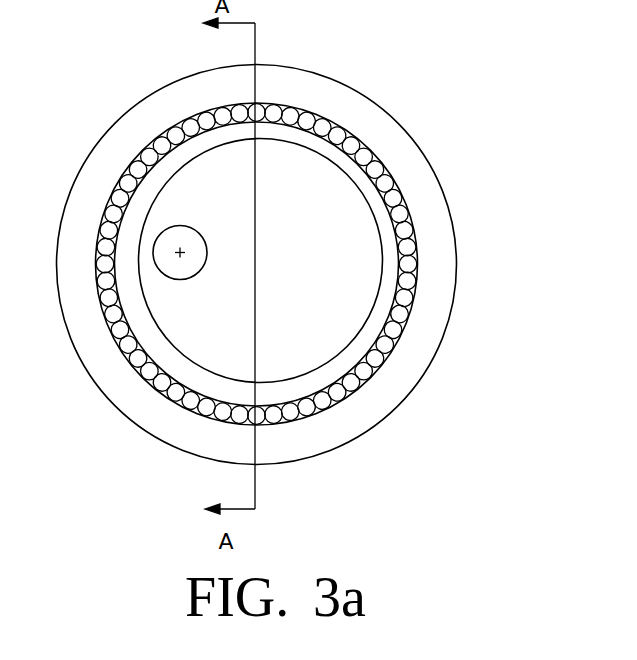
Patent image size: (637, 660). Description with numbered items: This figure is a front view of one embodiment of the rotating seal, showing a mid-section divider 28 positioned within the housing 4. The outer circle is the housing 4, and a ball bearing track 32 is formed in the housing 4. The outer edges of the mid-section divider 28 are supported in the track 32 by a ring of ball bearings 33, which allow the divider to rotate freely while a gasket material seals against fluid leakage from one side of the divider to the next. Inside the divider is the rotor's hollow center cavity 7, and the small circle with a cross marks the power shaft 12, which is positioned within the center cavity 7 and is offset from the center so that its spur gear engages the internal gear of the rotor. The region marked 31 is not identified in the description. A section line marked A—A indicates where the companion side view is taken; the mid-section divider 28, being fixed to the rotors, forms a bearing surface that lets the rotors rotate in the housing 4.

The housing 4 is at (288, 88).
The center cavity 7 is at (212, 326).
The power shaft 12 is at (180, 226).
The mid-section divider 28 is at (173, 160).
The inner body 31 is at (330, 242).
The ball bearing track 32 is at (420, 262).
The ball bearings 33 is at (310, 264).